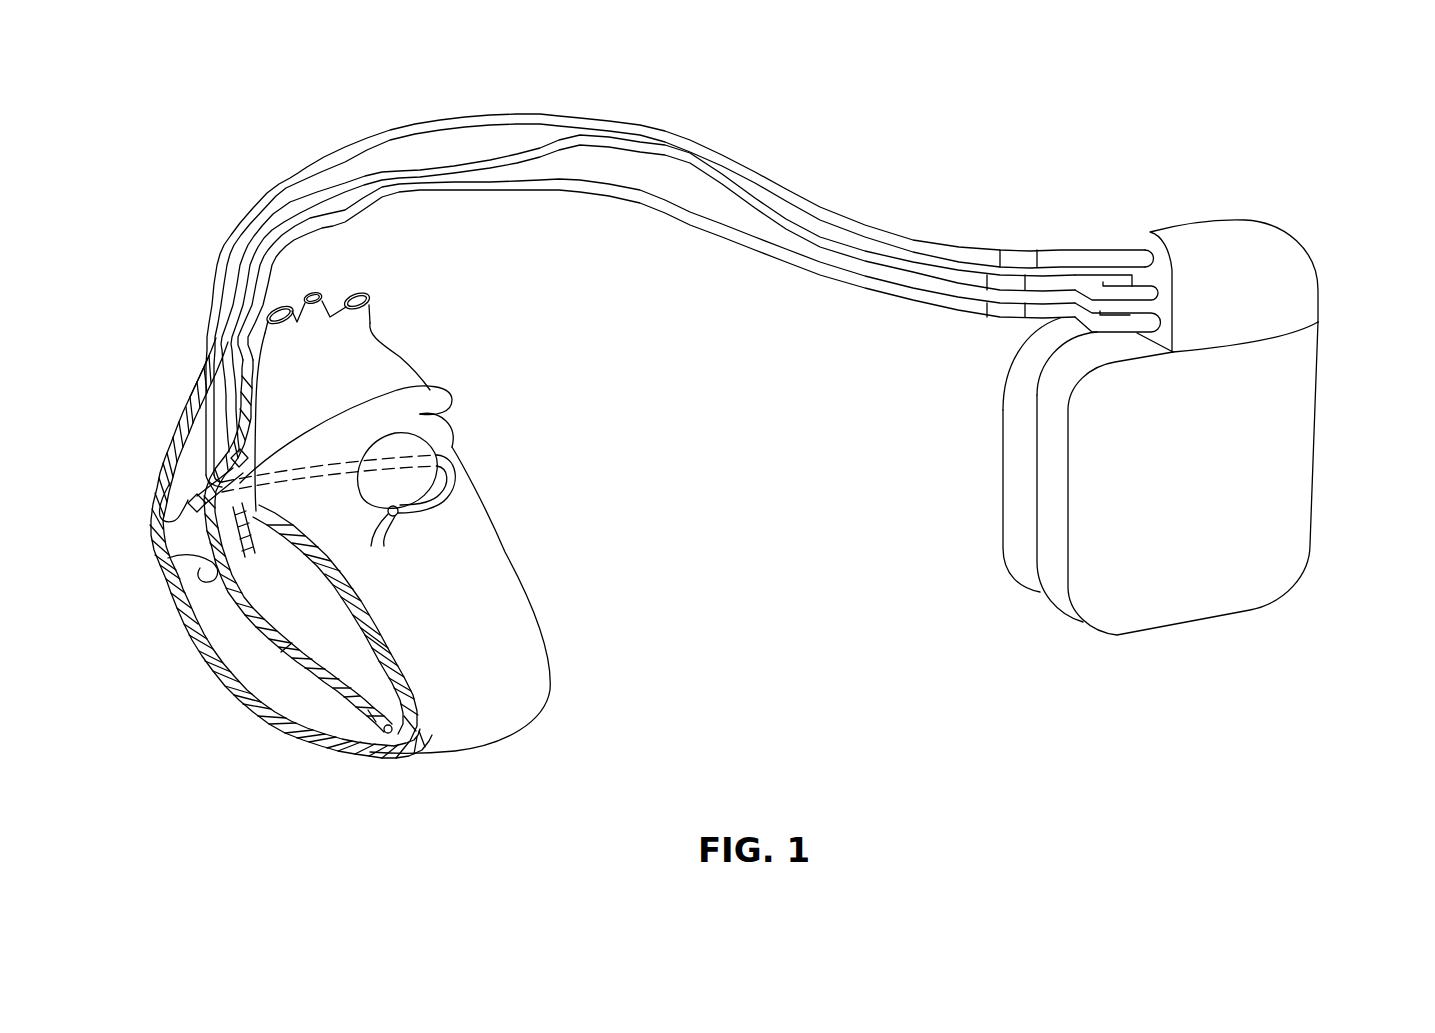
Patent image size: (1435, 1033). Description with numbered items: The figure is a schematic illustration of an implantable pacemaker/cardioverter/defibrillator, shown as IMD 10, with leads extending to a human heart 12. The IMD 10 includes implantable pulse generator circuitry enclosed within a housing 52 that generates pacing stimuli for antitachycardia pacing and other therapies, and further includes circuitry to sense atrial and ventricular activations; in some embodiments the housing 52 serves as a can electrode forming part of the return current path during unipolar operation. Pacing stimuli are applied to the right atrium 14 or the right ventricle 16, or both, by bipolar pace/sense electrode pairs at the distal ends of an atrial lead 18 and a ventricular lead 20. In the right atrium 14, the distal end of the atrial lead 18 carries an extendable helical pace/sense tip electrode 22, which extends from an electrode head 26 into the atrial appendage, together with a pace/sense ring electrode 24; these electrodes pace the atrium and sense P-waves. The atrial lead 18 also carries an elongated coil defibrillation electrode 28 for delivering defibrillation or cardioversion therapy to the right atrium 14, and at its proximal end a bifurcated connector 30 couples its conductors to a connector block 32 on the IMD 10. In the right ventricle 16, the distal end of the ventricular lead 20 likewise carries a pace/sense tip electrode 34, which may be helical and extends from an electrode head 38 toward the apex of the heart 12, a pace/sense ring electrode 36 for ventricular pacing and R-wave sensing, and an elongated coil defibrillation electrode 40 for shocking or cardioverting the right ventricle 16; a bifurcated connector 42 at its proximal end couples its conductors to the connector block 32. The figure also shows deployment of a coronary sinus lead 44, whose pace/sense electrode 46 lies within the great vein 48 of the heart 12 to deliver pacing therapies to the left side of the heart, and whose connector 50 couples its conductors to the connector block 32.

The IMD 10 is at (1211, 423).
The heart 12 is at (567, 567).
The right atrium 14 is at (150, 460).
The right ventricle 16 is at (207, 704).
The atrial lead 18 is at (462, 118).
The ventricular lead 20 is at (408, 168).
The pace/sense tip electrode 22 is at (245, 454).
The pace/sense ring electrode 24 is at (196, 496).
The electrode head 26 is at (230, 480).
The coil defibrillation electrode 28 is at (195, 400).
The bifurcated connector 30 is at (1062, 278).
The connector block 32 is at (1233, 227).
The pace/sense tip electrode 34 is at (391, 735).
The pace/sense ring electrode 36 is at (343, 698).
The electrode head 38 is at (373, 715).
The coil defibrillation electrode 40 is at (287, 645).
The bifurcated connector 42 is at (1042, 316).
The coronary sinus lead 44 is at (383, 197).
The pace/sense electrode 46 is at (447, 492).
The great vein 48 is at (402, 524).
The connector 50 is at (1132, 262).
The housing 52 is at (1180, 598).